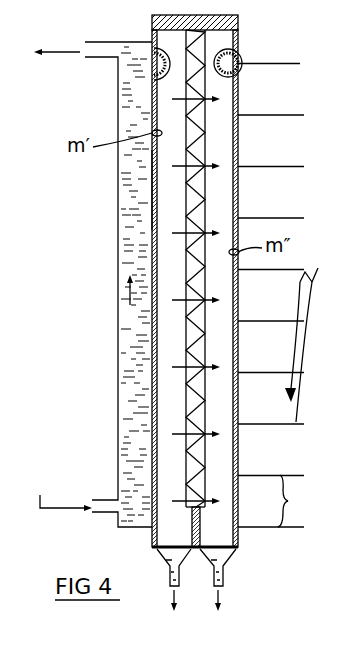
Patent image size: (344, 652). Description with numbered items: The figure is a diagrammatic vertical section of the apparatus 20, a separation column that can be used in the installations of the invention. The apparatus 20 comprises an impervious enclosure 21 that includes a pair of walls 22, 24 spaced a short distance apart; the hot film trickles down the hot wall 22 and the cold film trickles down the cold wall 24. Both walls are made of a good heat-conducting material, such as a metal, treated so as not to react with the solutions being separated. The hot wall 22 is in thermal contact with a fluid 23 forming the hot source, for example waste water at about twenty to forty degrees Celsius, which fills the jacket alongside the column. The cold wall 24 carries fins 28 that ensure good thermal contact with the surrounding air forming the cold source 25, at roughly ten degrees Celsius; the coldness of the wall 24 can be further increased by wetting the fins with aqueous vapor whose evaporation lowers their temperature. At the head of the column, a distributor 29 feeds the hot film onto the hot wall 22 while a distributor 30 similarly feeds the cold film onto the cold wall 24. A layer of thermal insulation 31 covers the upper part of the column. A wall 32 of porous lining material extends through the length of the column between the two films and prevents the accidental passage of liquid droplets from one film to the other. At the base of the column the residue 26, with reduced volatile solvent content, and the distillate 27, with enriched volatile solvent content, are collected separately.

The apparatus 20 is at (243, 29).
The impervious enclosure 21 is at (218, 210).
The hot wall 22 is at (152, 188).
The fluid 23 is at (130, 372).
The cold wall 24 is at (238, 156).
The cold source 25 is at (298, 282).
The residue 26 is at (162, 592).
The distillate 27 is at (243, 592).
The fins 28 is at (297, 501).
The distributor 29 is at (152, 79).
The distributor 30 is at (238, 48).
The layer of thermal insulation 31 is at (152, 17).
The wall 32 is at (200, 463).